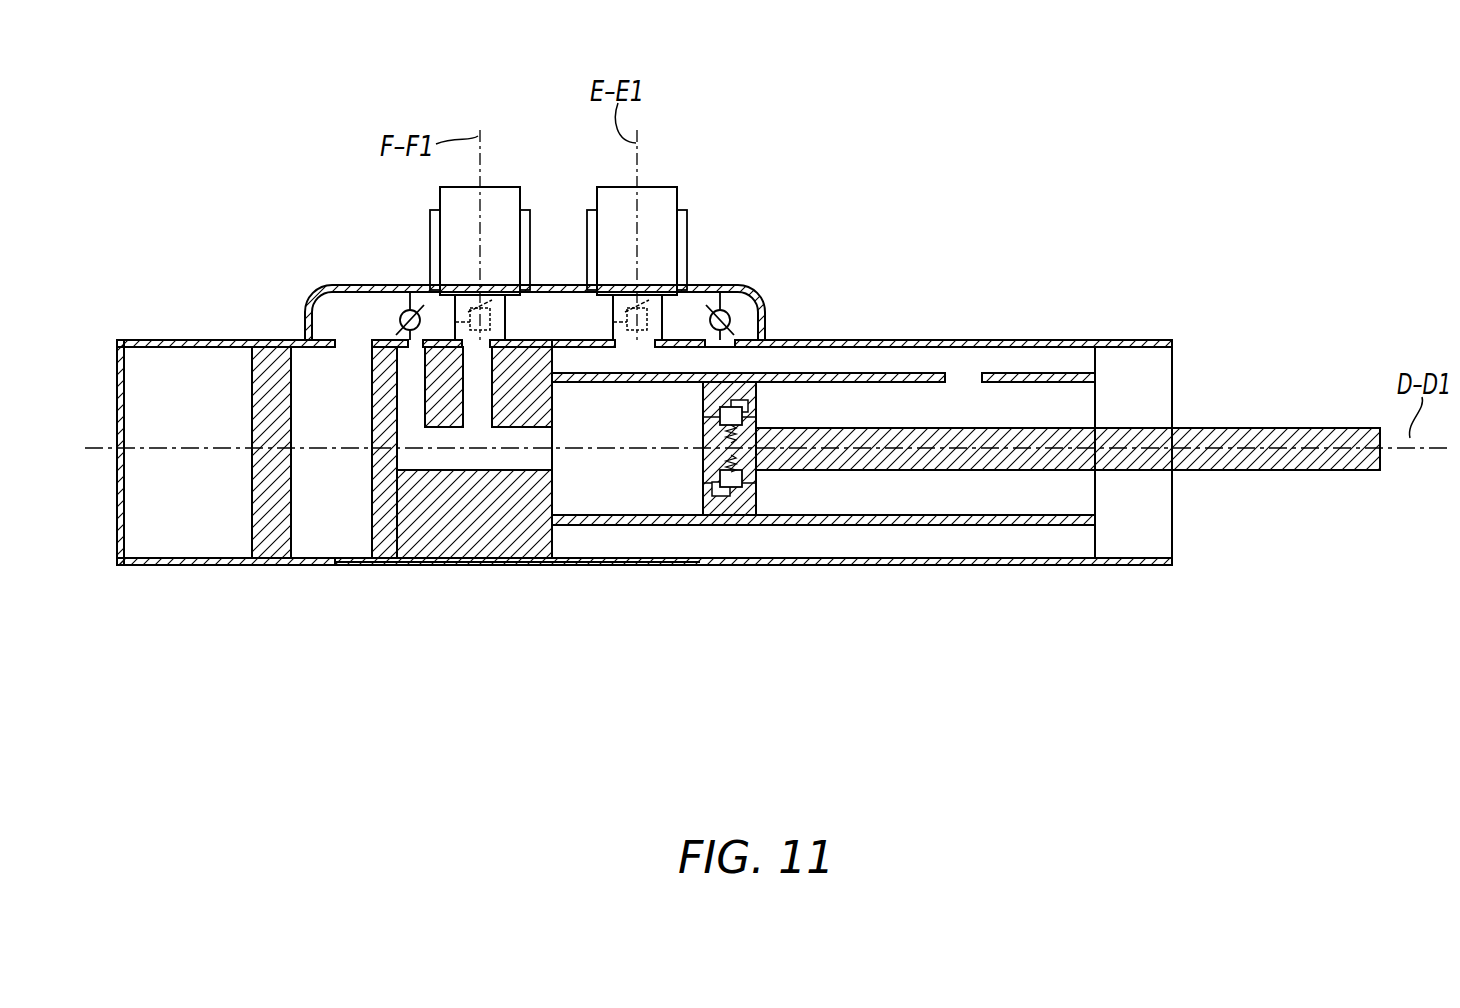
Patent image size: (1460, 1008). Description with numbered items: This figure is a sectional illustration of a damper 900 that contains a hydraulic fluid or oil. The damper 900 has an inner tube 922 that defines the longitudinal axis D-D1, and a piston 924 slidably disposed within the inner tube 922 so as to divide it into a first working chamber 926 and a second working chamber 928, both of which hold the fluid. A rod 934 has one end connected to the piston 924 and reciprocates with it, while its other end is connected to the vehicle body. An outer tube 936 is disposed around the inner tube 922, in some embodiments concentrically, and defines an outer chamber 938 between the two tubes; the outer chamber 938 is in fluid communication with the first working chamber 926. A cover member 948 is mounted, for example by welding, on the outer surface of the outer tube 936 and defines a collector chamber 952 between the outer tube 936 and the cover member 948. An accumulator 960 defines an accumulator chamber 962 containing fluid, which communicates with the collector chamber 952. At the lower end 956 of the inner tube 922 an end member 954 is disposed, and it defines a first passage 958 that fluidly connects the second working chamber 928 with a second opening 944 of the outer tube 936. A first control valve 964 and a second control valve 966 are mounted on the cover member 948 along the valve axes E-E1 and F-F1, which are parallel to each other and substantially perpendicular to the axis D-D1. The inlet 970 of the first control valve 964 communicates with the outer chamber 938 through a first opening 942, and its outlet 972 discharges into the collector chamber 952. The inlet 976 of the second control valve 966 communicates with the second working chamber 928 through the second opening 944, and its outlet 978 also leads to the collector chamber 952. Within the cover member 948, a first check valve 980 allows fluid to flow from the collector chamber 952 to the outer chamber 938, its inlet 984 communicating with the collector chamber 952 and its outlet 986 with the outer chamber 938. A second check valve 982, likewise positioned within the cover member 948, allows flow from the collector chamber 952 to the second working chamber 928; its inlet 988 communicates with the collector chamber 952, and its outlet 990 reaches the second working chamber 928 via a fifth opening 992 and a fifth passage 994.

The damper 900 is at (1262, 98).
The inner tube 922 is at (900, 377).
The piston 924 is at (723, 510).
The first working chamber 926 is at (843, 480).
The second working chamber 928 is at (593, 507).
The rod 934 is at (1290, 432).
The outer tube 936 is at (1075, 340).
The outer chamber 938 is at (1008, 366).
The first opening 942 is at (620, 352).
The second opening 944 is at (470, 351).
The cover member 948 is at (309, 284).
The collector chamber 952 is at (767, 296).
The end member 954 is at (527, 537).
The lower end 956 is at (554, 582).
The first passage 958 is at (468, 407).
The accumulator 960 is at (216, 567).
The accumulator chamber 962 is at (312, 527).
The first control valve 964 is at (662, 183).
The second control valve 966 is at (494, 183).
The inlet 970 is at (642, 352).
The outlet 972 is at (608, 323).
The inlet 976 is at (487, 351).
The outlet 978 is at (378, 313).
The first check valve 980 is at (715, 284).
The second check valve 982 is at (404, 306).
The inlet 984 is at (750, 300).
The outlet 986 is at (722, 340).
The inlet 988 is at (448, 321).
The outlet 990 is at (414, 347).
The fifth opening 992 is at (402, 352).
The fifth passage 994 is at (401, 411).